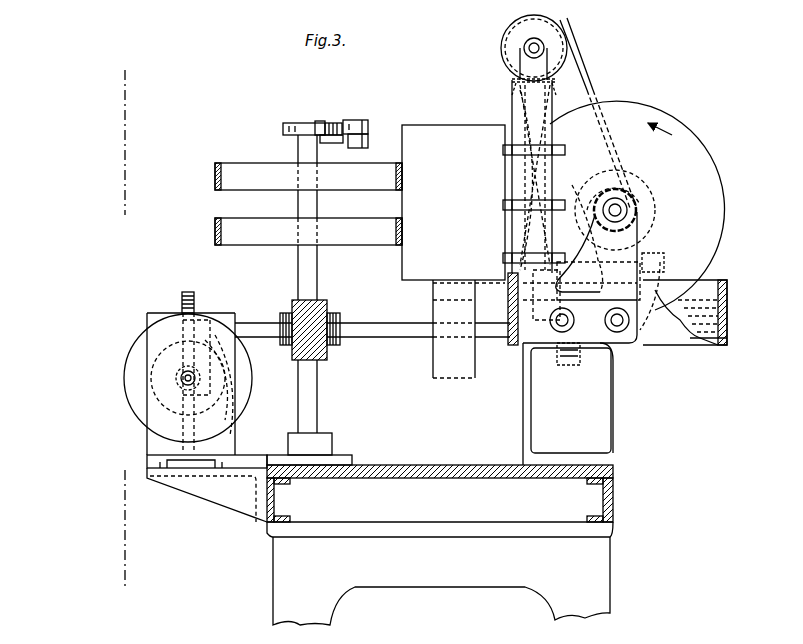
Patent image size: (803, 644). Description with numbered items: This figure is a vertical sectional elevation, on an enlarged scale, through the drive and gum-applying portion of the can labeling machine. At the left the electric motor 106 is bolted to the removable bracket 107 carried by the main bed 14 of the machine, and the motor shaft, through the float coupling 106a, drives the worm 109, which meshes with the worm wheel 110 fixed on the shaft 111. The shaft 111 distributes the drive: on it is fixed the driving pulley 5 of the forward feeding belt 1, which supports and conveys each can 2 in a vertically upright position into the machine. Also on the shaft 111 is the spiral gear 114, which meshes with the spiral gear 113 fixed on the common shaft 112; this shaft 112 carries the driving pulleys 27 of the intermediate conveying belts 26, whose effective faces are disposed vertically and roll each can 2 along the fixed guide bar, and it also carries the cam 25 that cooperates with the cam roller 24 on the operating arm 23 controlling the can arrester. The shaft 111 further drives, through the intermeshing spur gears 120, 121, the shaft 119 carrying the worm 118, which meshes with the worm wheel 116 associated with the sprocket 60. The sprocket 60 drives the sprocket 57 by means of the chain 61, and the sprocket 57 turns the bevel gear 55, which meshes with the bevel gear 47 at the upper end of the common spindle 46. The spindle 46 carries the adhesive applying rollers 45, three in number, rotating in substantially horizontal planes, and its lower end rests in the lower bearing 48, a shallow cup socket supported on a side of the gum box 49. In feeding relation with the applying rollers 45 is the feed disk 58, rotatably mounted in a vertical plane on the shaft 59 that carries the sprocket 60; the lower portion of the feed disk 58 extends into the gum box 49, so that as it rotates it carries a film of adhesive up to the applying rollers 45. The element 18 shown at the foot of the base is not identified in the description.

The feeding belt 1 is at (463, 373).
The can 2 is at (426, 142).
The inwardly disposed pulley 5 is at (120, 90).
The main bed 14 is at (352, 465).
The pedestal 18 is at (610, 592).
The operating arm 23 is at (345, 132).
The cam roller 24 is at (368, 125).
The cam 25 is at (330, 125).
The belt 26 is at (213, 172).
The pulleys 27 is at (232, 172).
The adhesive applying rollers 45 is at (503, 150).
The common spindle 46 is at (515, 125).
The bevel gear 47 is at (512, 78).
The lower bearing 48 is at (508, 280).
The gum box 49 is at (727, 295).
The bevel gear 55 is at (560, 28).
The sprocket 57 is at (555, 36).
The feed disk 58 is at (705, 125).
The shaft 59 is at (622, 205).
The sprocket 60 is at (632, 212).
The chain 61 is at (593, 90).
The electric motor 106 is at (150, 340).
The float coupling 106a is at (165, 385).
The removable bracket 107 is at (146, 461).
The worm 109 is at (180, 375).
The worm wheel 110 is at (188, 290).
The shaft 111 is at (264, 322).
The common shaft 112 is at (328, 124).
The spiral gear 113 is at (300, 340).
The spiral gear 114 is at (340, 340).
The worm wheel 116 is at (640, 185).
The worm 118 is at (620, 265).
The shaft 119 is at (662, 270).
The spur gear 120 is at (582, 190).
The spur gear 121 is at (568, 365).